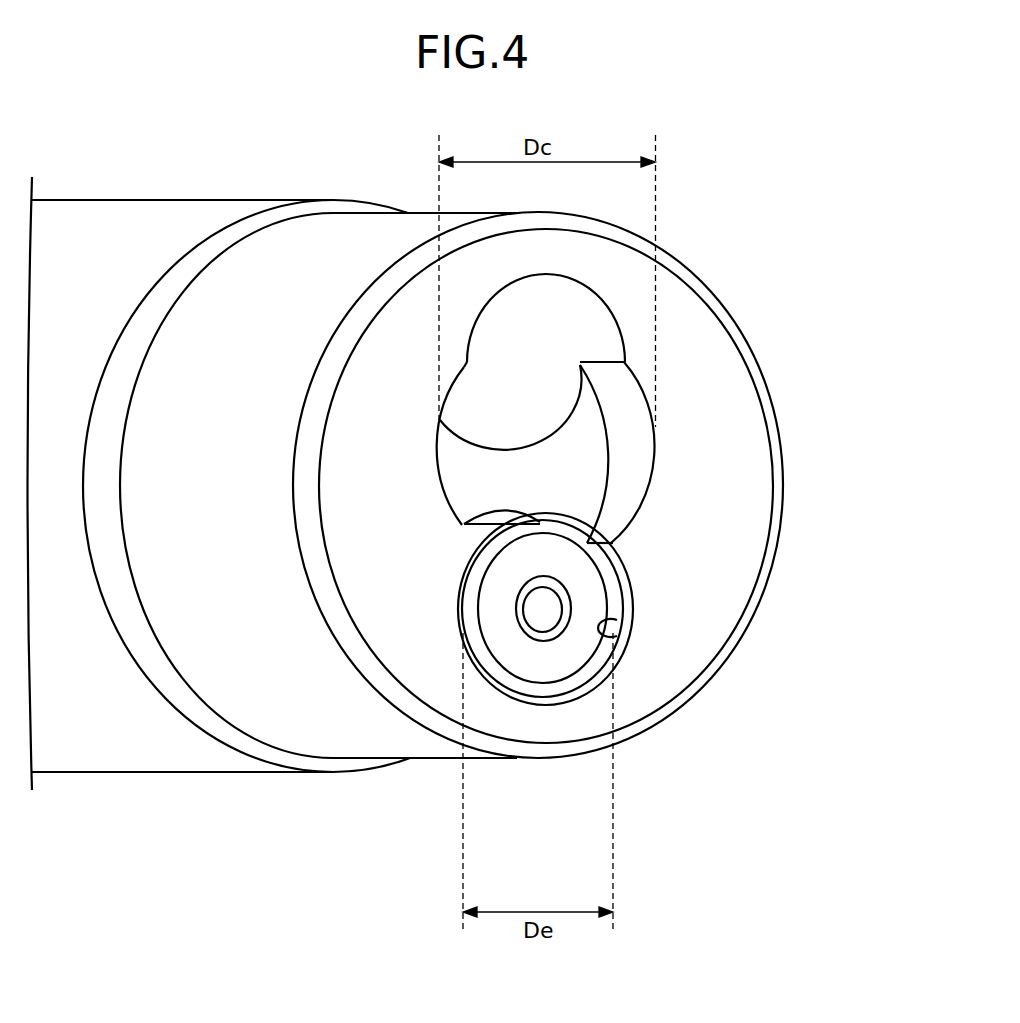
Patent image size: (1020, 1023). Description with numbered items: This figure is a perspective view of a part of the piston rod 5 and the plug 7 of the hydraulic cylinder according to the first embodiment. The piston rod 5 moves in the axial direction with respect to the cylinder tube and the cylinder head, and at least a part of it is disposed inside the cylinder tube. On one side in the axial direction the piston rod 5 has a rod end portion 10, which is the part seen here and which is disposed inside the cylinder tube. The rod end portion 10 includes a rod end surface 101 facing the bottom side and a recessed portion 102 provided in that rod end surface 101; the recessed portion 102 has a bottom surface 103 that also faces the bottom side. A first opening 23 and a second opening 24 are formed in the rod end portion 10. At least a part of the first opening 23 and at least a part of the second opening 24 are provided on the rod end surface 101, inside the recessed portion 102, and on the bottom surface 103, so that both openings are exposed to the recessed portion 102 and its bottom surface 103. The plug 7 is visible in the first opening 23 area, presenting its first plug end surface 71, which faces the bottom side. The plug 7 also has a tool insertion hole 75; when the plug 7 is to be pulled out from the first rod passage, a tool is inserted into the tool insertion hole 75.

The piston rod 5 is at (160, 200).
The rod end portion 10 is at (880, 447).
The rod end surface 101 is at (743, 515).
The recessed portion 102 is at (642, 463).
The bottom surface 103 is at (591, 421).
The second opening 24 is at (595, 312).
The plug 7 is at (643, 675).
The first plug end surface 71 is at (525, 665).
The tool insertion hole 75 is at (545, 608).
The first opening 23 is at (616, 621).